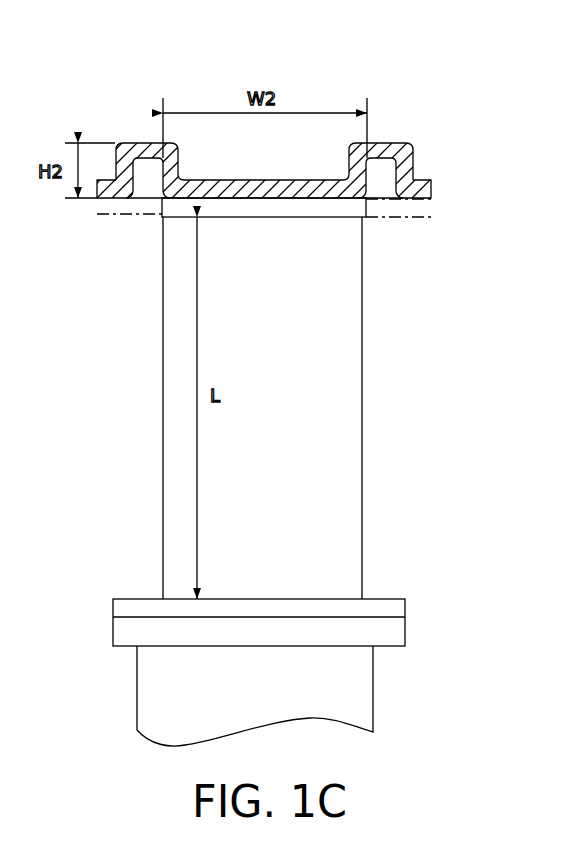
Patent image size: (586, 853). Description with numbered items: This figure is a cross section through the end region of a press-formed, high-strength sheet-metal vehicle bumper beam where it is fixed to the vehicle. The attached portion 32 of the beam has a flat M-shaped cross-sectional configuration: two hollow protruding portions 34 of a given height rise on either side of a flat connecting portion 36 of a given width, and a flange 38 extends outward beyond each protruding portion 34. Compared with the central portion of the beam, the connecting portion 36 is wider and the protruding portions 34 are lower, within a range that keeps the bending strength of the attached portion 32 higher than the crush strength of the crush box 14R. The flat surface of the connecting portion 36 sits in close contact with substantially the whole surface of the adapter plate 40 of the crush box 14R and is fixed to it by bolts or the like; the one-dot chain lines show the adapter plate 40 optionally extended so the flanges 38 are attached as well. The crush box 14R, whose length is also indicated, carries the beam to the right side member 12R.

The attached portion 32 is at (402, 107).
The protruding portion 34 is at (142, 150).
The connecting portion 36 is at (280, 188).
The flange 38 is at (110, 190).
The adapter plate 40 is at (337, 212).
The crush box 14R is at (345, 429).
The right side member 12R is at (360, 693).